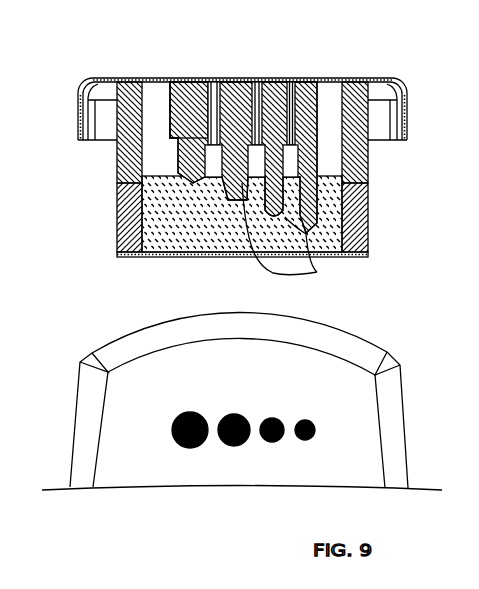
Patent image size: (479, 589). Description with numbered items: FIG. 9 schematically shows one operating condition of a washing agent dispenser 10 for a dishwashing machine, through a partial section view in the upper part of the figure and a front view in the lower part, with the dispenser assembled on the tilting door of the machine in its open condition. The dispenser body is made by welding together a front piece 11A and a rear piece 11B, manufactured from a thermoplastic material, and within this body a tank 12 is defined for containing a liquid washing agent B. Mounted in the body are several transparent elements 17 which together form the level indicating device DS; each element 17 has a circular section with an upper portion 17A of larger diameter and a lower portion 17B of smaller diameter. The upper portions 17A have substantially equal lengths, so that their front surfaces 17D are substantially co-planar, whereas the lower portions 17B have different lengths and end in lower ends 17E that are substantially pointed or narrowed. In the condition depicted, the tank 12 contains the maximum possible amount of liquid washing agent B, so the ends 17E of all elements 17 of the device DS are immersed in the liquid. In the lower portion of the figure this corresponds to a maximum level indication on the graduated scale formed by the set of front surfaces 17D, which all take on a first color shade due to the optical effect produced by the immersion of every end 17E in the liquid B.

The closure/cap assembly 10 is at (61, 83).
The front piece 11A is at (357, 82).
The rear piece 11B is at (115, 228).
The tank 12 is at (152, 145).
The transparent element 17 is at (186, 78).
The upper portion 17A is at (187, 120).
The lower portion 17B is at (340, 163).
The front surface 17D is at (205, 76).
The lower end 17E is at (317, 272).
The liquid washing agent B is at (163, 237).
The device DS is at (308, 442).